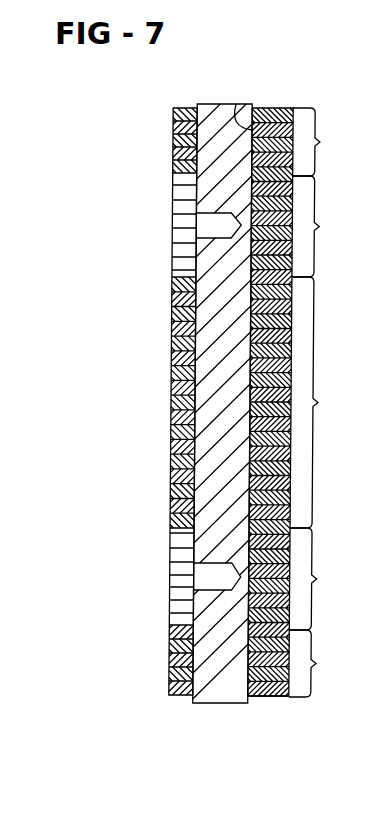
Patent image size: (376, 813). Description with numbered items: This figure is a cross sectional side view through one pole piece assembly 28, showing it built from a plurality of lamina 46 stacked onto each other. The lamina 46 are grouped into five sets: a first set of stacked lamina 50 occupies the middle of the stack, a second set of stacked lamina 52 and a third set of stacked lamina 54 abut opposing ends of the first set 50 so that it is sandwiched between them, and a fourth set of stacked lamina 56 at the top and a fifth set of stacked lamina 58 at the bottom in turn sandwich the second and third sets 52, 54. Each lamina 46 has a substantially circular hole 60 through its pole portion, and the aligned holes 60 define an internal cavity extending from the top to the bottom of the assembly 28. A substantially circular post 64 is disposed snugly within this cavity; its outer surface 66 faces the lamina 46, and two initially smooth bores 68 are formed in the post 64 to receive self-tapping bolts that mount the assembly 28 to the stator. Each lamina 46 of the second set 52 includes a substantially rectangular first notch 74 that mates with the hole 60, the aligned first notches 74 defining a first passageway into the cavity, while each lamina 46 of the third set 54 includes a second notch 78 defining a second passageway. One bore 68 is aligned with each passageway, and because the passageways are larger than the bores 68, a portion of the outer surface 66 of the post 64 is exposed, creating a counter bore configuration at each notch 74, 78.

The pole piece assembly 28 is at (155, 406).
The lamina 46 is at (174, 157).
The first set of stacked lamina 50 is at (320, 402).
The second set of stacked lamina 52 is at (322, 226).
The third set of stacked lamina 54 is at (319, 579).
The fourth set of stacked lamina 56 is at (322, 142).
The fifth set of stacked lamina 58 is at (319, 663).
The hole 60 is at (237, 104).
The post 64 is at (224, 690).
The outer surface 66 is at (194, 557).
The bore 68 is at (235, 240).
The first notch 74 is at (184, 184).
The second notch 78 is at (177, 623).